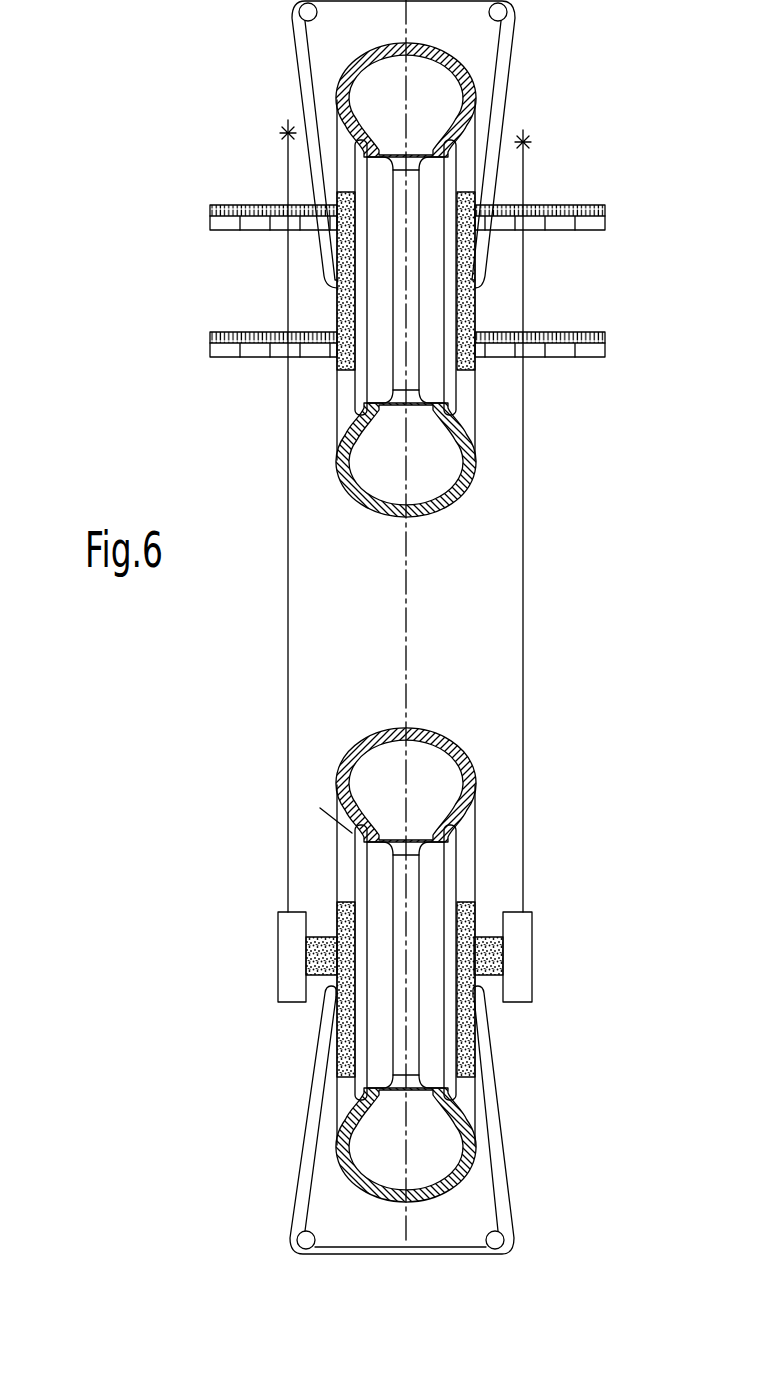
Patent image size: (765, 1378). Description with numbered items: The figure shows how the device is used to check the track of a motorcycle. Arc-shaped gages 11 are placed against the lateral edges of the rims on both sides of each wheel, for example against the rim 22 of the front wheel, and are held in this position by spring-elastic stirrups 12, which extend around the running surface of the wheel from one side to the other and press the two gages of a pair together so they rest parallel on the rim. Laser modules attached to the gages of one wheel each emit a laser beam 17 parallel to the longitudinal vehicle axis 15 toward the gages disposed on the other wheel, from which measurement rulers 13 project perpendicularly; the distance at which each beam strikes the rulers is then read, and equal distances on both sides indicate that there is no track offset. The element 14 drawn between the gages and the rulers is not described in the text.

The arc-shaped gage 11 is at (336, 385).
The spring-elastic stirrup 12 is at (505, 80).
The measurement ruler 13 is at (215, 331).
The clamping block 14 is at (288, 971).
The longitudinal vehicle axis 15 is at (421, 628).
The laser beam 17 is at (279, 664).
The rim 22 is at (457, 414).